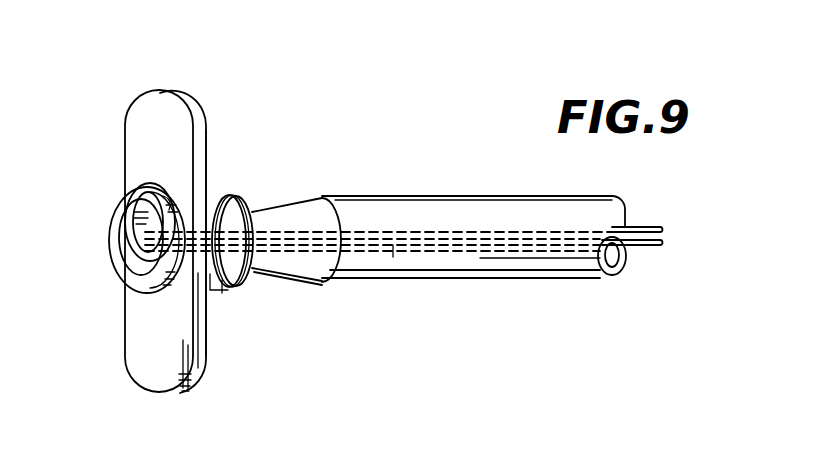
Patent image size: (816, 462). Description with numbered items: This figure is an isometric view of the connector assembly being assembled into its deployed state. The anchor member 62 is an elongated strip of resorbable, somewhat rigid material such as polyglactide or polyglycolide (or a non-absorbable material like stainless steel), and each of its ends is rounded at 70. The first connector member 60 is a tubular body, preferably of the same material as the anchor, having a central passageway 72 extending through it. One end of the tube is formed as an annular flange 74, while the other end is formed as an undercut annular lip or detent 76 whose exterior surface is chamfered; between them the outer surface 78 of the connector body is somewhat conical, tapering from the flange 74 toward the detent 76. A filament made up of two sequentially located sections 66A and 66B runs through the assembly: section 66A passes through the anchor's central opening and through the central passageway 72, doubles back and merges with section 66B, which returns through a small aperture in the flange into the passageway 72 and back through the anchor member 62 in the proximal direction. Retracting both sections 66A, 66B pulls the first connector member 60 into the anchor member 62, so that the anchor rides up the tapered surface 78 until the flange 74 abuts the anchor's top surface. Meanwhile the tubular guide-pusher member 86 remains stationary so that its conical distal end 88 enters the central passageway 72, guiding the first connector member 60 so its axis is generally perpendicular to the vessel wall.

The rounded end 70 is at (158, 90).
The anchor member 62 is at (203, 333).
The central passageway 72 is at (147, 258).
The annular flange 74 is at (153, 294).
The outer surface 78 is at (212, 203).
The detent 76 is at (250, 207).
The first connector member 60 is at (222, 285).
The conical distal portion end 88 is at (303, 280).
The guide-pusher member 86 is at (520, 272).
The filament section 66A is at (393, 257).
The filament section 66B is at (349, 226).